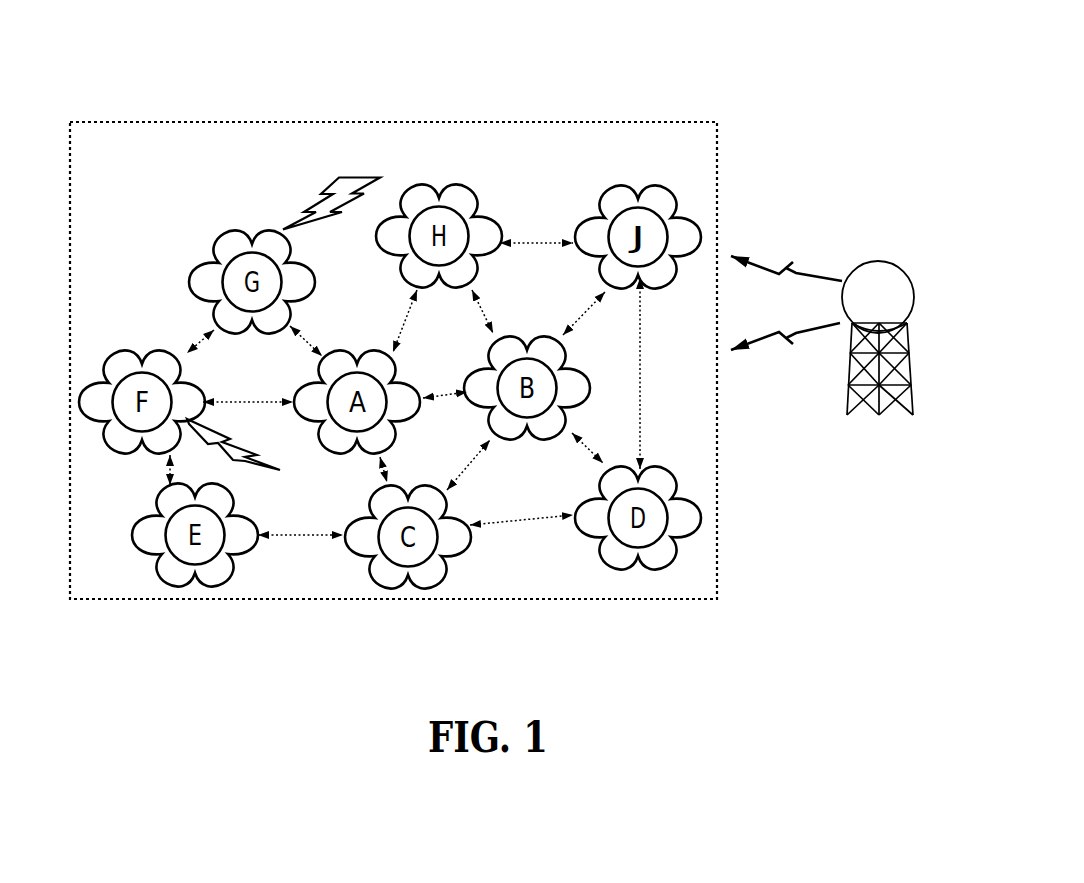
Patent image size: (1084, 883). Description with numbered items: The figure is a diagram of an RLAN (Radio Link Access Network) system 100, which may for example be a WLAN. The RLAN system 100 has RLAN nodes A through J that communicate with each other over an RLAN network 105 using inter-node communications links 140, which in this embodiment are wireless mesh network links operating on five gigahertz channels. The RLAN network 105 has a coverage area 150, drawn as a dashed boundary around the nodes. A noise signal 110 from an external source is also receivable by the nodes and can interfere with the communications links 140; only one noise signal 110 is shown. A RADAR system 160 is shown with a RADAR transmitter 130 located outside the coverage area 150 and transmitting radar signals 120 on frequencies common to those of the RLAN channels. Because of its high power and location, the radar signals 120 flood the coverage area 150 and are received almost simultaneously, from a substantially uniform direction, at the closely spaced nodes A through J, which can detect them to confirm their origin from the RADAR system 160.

The RLAN system 100 is at (680, 43).
The RLAN network 105 is at (98, 247).
The noise signal 110 is at (358, 177).
The radar signals 120 is at (788, 271).
The RADAR transmitter 130 is at (893, 268).
The inter-node communications links 140 is at (200, 343).
The coverage area 150 is at (111, 148).
The RADAR system 160 is at (894, 299).